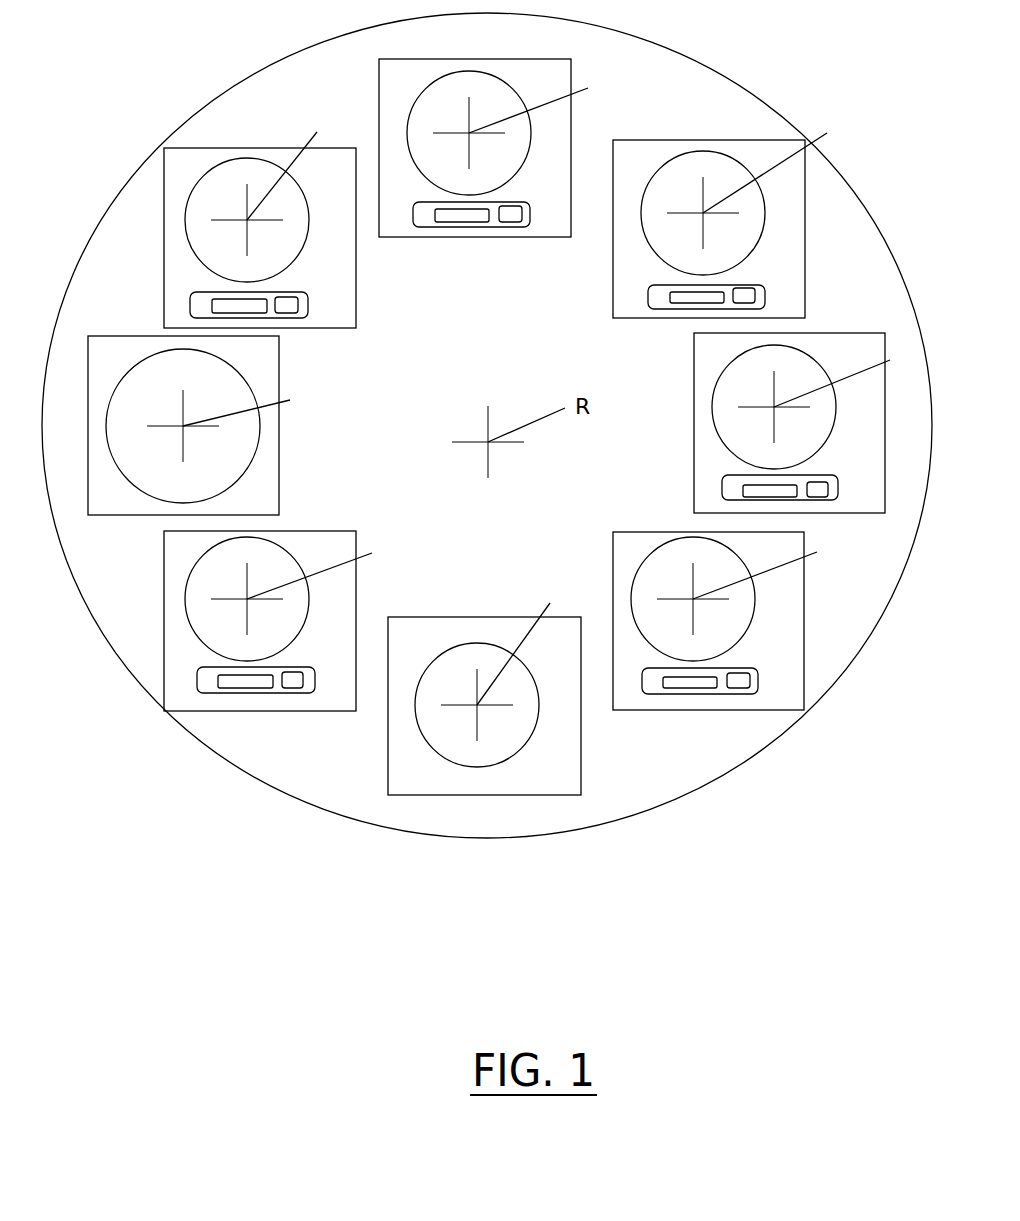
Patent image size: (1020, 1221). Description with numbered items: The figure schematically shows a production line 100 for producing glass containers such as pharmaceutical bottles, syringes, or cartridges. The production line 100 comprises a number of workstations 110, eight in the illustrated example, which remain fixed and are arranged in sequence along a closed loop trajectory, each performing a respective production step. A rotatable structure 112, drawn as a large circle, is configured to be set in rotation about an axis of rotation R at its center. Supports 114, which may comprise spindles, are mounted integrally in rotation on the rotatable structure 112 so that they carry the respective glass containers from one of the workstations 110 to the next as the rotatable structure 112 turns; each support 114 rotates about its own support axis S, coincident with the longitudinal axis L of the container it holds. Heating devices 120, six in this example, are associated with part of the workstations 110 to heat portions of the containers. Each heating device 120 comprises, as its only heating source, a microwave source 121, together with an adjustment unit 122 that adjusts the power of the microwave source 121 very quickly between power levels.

The production line 100 is at (178, 105).
The workstations 110 is at (542, 58).
The rotatable structure 112 is at (695, 795).
The supports 114 is at (448, 78).
The heating devices 120 is at (428, 227).
The microwave sources 121 is at (478, 222).
The adjustment units 122 is at (521, 222).